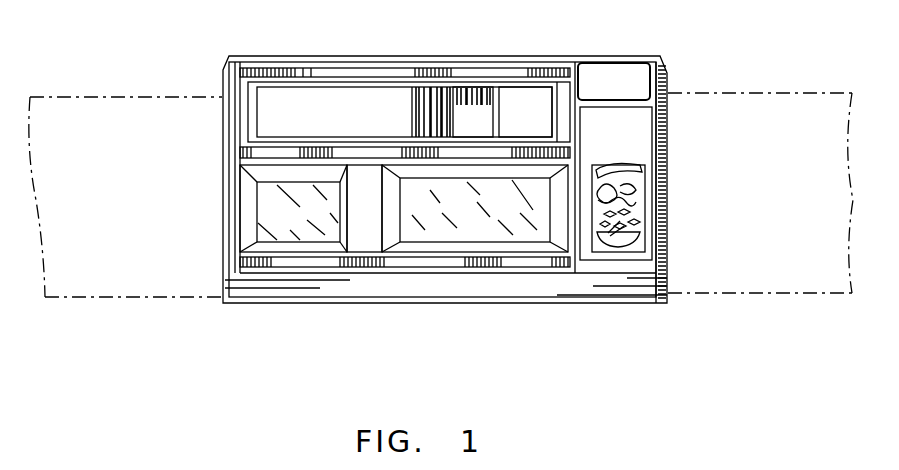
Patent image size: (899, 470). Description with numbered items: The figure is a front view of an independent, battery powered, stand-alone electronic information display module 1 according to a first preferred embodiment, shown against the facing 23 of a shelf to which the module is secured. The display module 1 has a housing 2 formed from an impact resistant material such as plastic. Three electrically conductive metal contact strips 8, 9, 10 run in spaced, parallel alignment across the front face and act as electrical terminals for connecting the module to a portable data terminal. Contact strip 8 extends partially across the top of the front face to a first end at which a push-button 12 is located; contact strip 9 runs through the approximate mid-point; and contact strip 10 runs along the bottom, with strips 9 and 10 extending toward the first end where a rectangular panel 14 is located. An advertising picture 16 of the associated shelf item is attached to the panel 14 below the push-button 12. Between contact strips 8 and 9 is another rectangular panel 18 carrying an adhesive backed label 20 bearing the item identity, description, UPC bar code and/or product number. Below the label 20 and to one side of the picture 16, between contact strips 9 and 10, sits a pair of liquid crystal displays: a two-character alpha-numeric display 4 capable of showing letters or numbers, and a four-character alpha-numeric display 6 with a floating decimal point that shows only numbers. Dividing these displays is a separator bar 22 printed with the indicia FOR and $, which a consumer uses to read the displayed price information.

The display module 1 is at (183, 263).
The housing 2 is at (224, 152).
The two-character alpha-numeric display 4 is at (272, 208).
The four-character alpha-numeric display 6 is at (452, 233).
The contact strip 8 is at (272, 70).
The contact strip 9 is at (240, 157).
The contact strip 10 is at (273, 265).
The push-button 12 is at (647, 92).
The rectangular panel 14 is at (644, 257).
The advertising picture 16 is at (640, 188).
The rectangular panel 18 is at (258, 102).
The adhesive backed label 20 is at (248, 115).
The separator bar 22 is at (347, 227).
The facing 23 is at (712, 90).